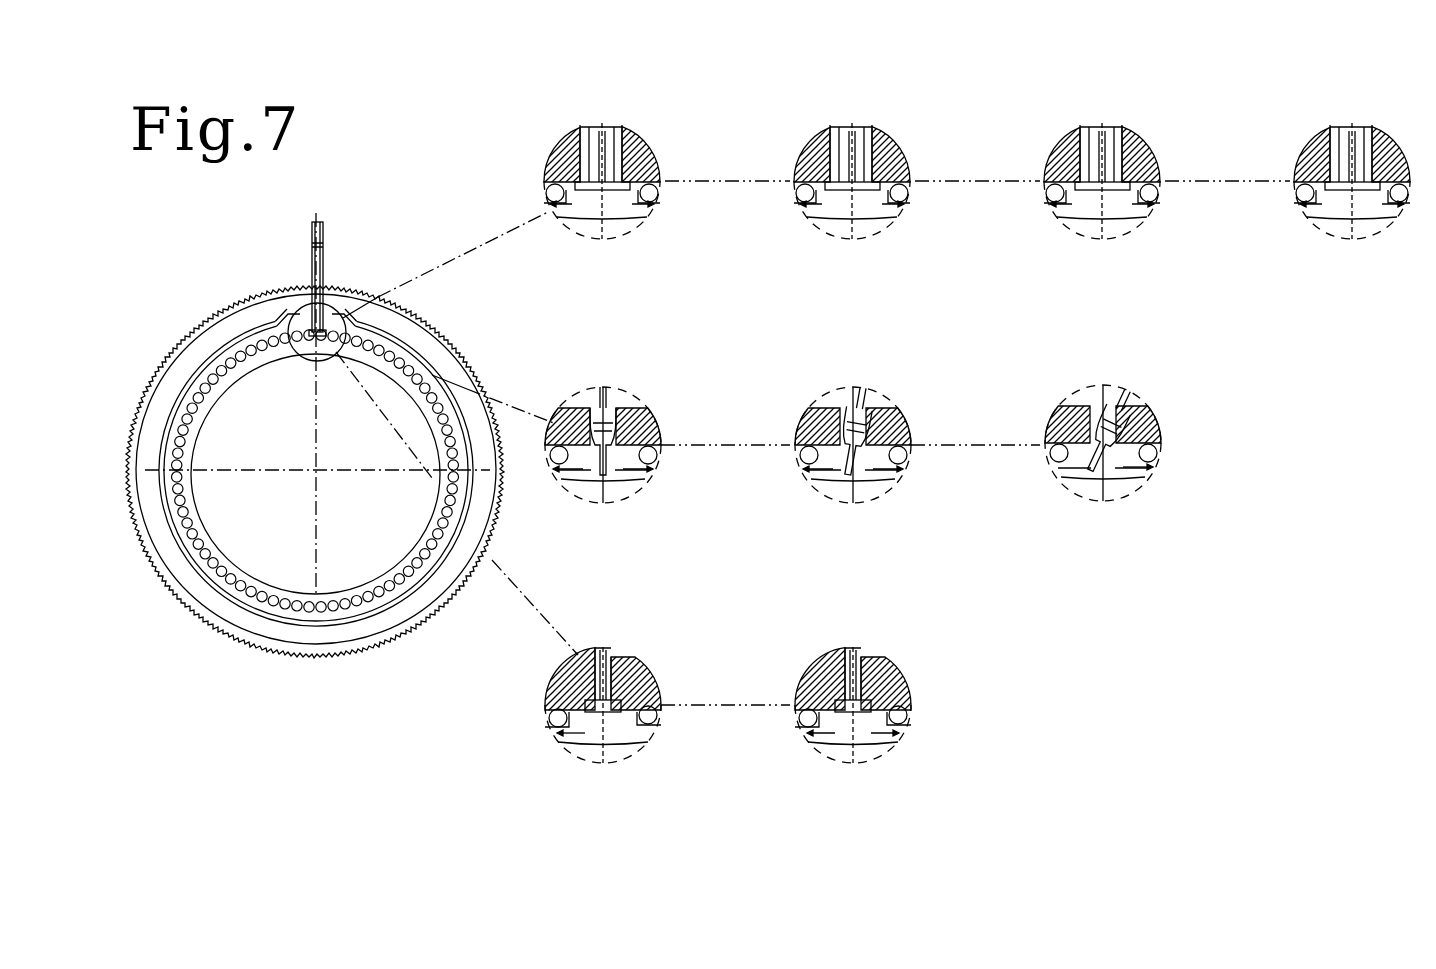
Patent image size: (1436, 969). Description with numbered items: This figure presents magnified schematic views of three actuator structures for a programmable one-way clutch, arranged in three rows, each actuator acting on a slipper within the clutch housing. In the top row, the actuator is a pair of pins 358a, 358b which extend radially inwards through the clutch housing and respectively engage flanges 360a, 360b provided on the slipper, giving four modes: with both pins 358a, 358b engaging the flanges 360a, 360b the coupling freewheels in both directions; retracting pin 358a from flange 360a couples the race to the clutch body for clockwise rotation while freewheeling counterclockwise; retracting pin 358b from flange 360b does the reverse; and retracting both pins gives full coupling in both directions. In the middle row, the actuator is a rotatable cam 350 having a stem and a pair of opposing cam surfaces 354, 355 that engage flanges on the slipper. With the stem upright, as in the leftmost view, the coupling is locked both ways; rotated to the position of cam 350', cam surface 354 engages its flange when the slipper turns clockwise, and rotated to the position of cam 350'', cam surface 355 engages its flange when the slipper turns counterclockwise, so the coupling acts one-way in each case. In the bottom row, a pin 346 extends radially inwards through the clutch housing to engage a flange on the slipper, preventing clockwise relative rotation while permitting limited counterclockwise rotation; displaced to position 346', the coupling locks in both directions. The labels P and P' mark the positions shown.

The pin 358a is at (916, 128).
The pin 358b is at (1022, 128).
The flange 360a is at (533, 228).
The flange 360b is at (678, 224).
The rotatable cam 350 is at (588, 407).
The rotatable cam 350' is at (874, 415).
The rotatable cam 350'' is at (1087, 416).
The cam surface 354 is at (678, 386).
The cam surface 355 is at (888, 393).
The pin 346 is at (641, 687).
The pin 346' is at (894, 687).
The position P is at (786, 443).
The position P' is at (877, 323).